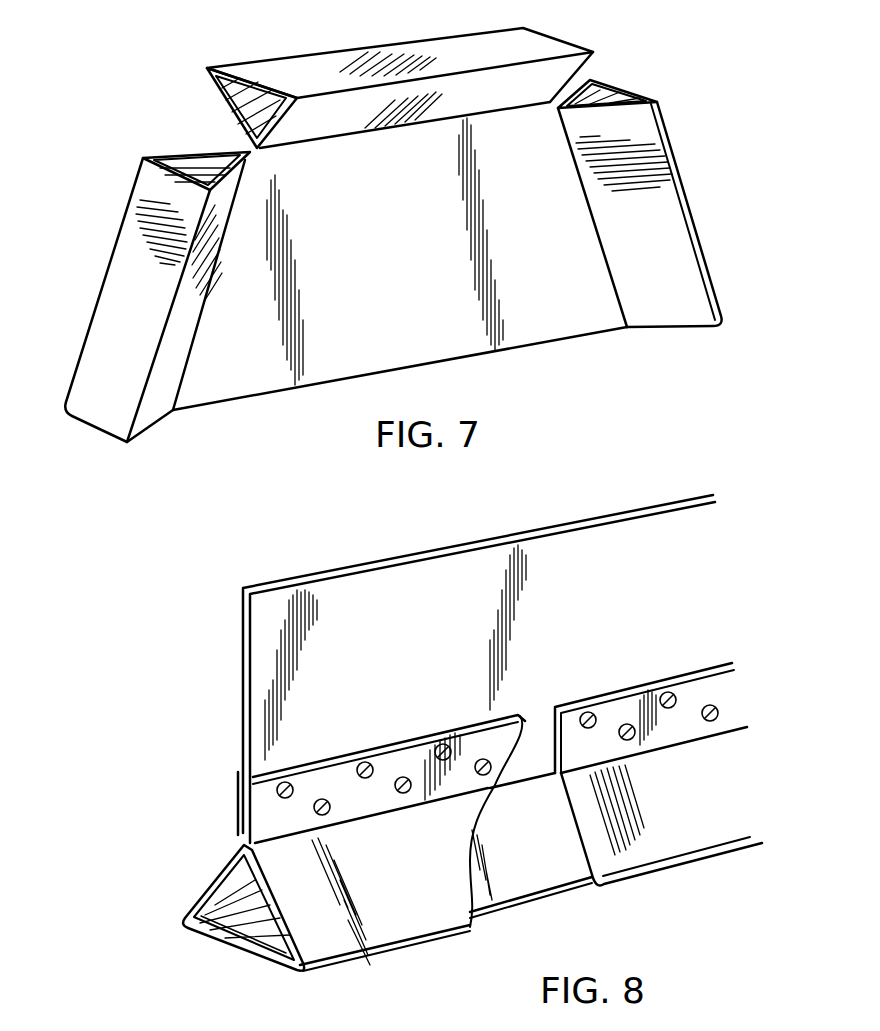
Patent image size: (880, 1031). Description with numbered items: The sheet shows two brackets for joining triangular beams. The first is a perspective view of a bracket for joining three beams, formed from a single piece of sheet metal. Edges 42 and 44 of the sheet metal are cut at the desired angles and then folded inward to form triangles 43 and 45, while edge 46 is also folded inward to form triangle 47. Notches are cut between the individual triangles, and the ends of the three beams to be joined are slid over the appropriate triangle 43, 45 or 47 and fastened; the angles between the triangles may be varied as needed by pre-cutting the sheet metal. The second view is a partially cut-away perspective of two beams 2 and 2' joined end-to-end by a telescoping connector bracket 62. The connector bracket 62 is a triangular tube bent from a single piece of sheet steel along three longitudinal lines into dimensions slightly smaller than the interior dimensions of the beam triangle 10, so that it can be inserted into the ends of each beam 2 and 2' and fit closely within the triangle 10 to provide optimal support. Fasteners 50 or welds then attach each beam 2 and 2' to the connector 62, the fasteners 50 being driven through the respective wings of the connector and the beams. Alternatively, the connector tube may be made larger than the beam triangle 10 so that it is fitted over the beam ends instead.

In FIG. 8, the beam 2 is at (479, 740).
In FIG. 8, the beam 2' is at (658, 782).
In FIG. 8, the beam triangle 10 is at (245, 955).
In FIG. 7, the edge 42 is at (217, 275).
In FIG. 7, the triangle 43 is at (120, 240).
In FIG. 7, the edge 44 is at (607, 270).
In FIG. 7, the triangle 45 is at (682, 240).
In FIG. 7, the edge 46 is at (367, 130).
In FIG. 7, the triangle 47 is at (287, 68).
In FIG. 8, the fasteners 50 is at (440, 748).
In FIG. 8, the telescoping connector bracket 62 is at (527, 870).